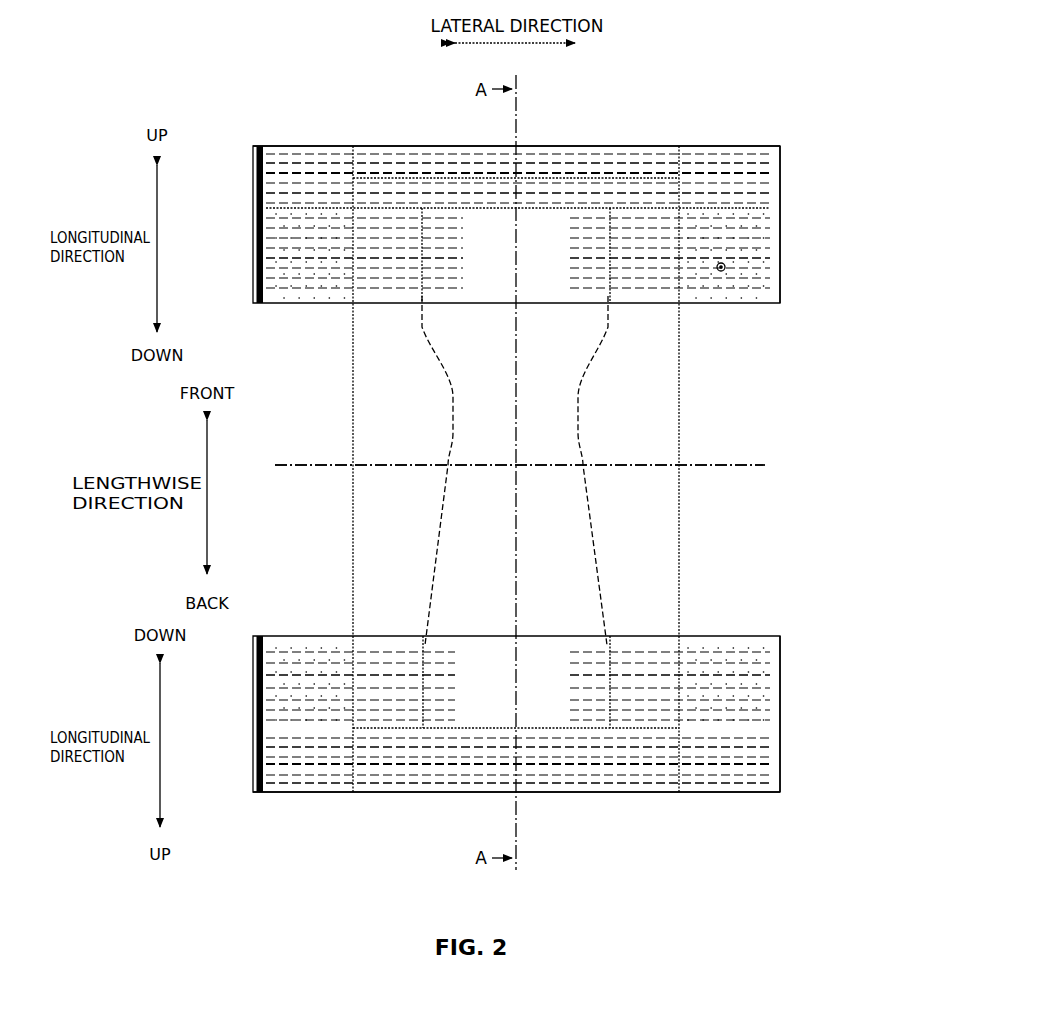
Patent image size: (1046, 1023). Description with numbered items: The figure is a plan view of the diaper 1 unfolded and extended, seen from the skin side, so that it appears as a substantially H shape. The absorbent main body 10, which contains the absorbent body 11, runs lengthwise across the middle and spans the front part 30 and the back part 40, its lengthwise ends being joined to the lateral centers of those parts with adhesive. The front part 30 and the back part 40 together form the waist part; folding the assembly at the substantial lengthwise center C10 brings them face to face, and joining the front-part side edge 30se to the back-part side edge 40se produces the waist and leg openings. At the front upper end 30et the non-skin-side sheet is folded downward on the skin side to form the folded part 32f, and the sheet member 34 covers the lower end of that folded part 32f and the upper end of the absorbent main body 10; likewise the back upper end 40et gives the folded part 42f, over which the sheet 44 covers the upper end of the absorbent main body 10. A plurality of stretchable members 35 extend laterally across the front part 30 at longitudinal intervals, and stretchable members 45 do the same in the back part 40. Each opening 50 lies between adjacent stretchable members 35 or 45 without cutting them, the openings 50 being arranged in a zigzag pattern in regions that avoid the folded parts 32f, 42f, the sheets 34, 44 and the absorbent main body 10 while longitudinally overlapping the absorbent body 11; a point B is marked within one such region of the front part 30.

The diaper 1 is at (360, 88).
The absorbent main body 10 is at (686, 425).
The absorbent body 11 is at (596, 520).
The front part 30 is at (262, 147).
The front upper end 30et is at (644, 146).
The front-part side edge 30se is at (781, 280).
The folded part 32f is at (772, 162).
The sheet member 34 is at (764, 192).
The stretchable members 35 is at (307, 146).
The back part 40 is at (270, 795).
The back upper end 40et is at (644, 794).
The back-part side edge 40se is at (781, 706).
The folded part 42f is at (778, 793).
The sheet 44 is at (773, 737).
The stretchable members 45 is at (780, 675).
The opening 50 is at (297, 219).
The point B is at (720, 272).
The substantial lengthwise center C10 is at (535, 465).